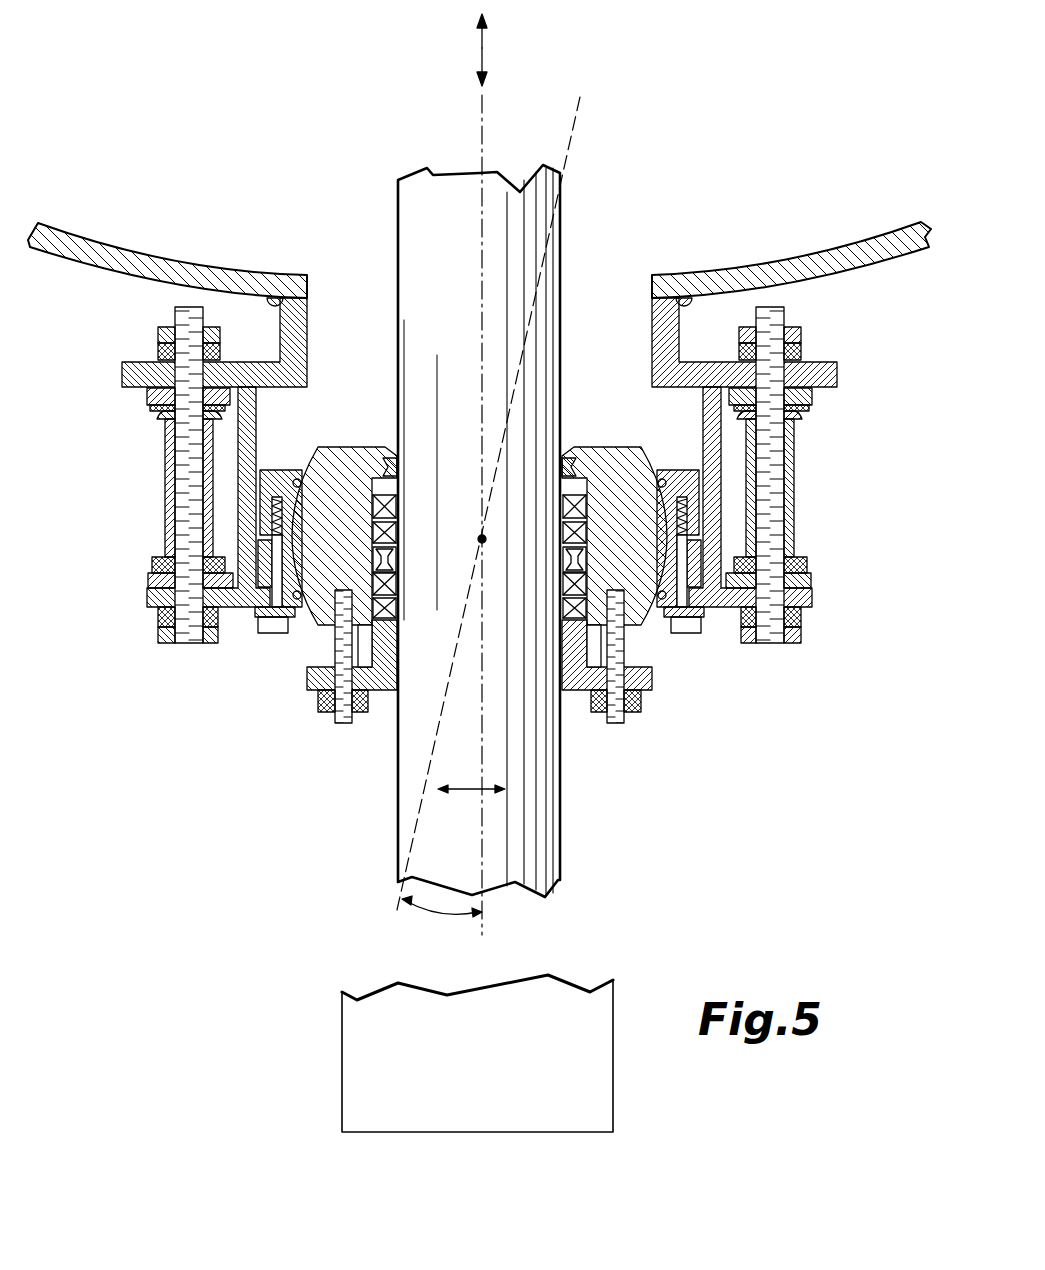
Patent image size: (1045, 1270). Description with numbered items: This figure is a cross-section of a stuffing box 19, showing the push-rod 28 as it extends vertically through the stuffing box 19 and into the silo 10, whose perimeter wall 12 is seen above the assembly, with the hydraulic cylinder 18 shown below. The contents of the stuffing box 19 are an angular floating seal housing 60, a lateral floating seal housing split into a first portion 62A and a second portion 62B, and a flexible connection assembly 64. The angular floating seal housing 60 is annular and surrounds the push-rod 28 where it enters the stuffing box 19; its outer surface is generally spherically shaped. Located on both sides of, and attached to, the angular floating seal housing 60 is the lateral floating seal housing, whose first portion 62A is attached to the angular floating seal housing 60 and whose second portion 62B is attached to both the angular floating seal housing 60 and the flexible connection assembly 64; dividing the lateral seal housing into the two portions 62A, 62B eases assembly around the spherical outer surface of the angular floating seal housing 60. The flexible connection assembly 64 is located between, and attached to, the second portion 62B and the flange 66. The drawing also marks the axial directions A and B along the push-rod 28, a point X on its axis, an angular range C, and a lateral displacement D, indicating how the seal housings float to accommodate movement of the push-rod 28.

The silo 10 is at (479, 481).
The perimeter wall 12 is at (147, 272).
The hydraulic cylinder 18 is at (365, 1018).
The stuffing box 19 is at (832, 702).
The push-rod 28 is at (470, 312).
The angular floating seal housing 60 is at (346, 450).
The first portion of lateral floating seal housing 62A is at (278, 473).
The second portion of lateral floating seal housing 62B is at (250, 600).
The flexible connection assembly 64 is at (128, 507).
The flange 66 is at (297, 337).
The upward direction A is at (492, 30).
The downward direction B is at (492, 67).
The pivot angle C is at (455, 915).
The lateral displacement D is at (468, 789).
The pivot point X is at (480, 539).